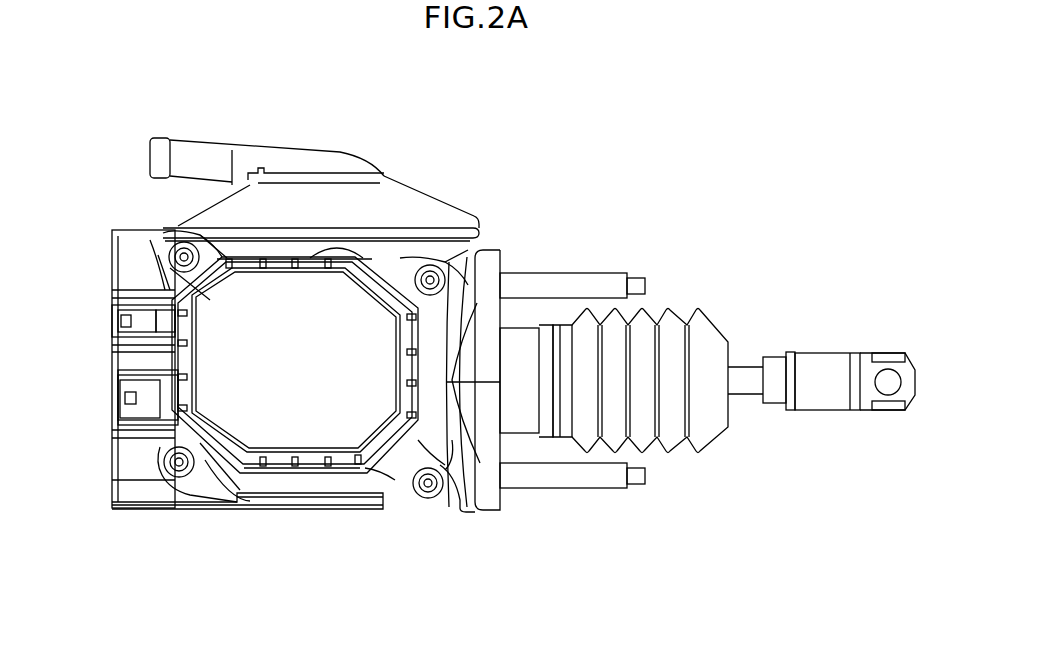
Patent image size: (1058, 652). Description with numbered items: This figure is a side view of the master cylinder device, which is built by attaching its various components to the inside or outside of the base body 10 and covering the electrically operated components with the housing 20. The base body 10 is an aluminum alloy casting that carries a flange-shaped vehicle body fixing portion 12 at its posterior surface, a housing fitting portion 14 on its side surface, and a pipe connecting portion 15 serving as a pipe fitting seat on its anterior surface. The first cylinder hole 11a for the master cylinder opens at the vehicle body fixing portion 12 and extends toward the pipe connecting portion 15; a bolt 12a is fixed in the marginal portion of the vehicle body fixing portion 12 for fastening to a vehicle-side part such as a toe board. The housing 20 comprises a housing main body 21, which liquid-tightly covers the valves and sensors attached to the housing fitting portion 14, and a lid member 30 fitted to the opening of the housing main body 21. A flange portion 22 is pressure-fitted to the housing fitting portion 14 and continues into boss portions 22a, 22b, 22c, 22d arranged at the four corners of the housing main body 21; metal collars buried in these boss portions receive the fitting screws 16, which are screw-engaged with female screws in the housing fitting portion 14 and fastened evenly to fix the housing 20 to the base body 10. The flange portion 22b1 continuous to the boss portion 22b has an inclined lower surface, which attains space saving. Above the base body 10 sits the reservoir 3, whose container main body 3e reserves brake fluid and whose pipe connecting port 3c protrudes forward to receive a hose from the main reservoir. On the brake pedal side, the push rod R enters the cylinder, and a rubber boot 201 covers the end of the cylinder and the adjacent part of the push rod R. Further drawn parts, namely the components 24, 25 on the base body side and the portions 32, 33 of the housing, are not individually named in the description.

The reservoir 3 is at (396, 170).
The pipe connecting port 3c is at (263, 140).
The container main body 3e is at (404, 202).
The base body 10 is at (110, 232).
The first cylinder hole 11a is at (517, 412).
The vehicle body fixing portion 12 is at (508, 256).
The bolt 12a is at (606, 280).
The housing fitting portion 14 is at (185, 495).
The pipe connecting portion 15 is at (110, 478).
The fitting screws 16 is at (186, 243).
The housing 20 is at (278, 252).
The housing main body 21 is at (273, 482).
The flange portion 22 is at (330, 492).
The boss portion 22a is at (152, 238).
The boss portion 22b is at (160, 473).
The flange portion 22b1 is at (210, 500).
The boss portion 22c is at (446, 500).
The boss portion 22d is at (443, 282).
The connector 24 is at (113, 318).
The connector 25 is at (120, 396).
The lid member 30 is at (340, 298).
The rail 32 is at (390, 256).
The gusset 33 is at (180, 258).
The boot 201 is at (710, 335).
The push rod R is at (748, 368).